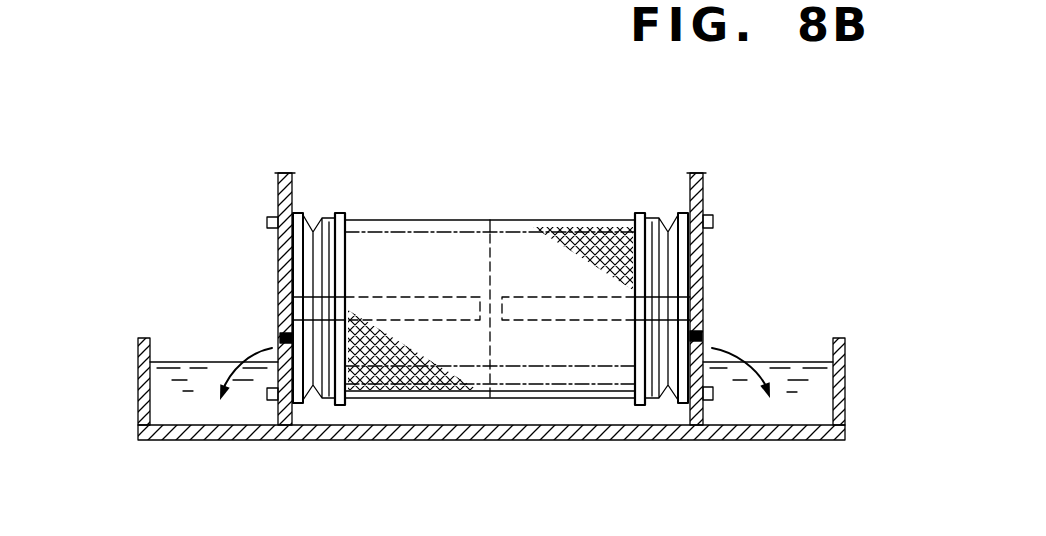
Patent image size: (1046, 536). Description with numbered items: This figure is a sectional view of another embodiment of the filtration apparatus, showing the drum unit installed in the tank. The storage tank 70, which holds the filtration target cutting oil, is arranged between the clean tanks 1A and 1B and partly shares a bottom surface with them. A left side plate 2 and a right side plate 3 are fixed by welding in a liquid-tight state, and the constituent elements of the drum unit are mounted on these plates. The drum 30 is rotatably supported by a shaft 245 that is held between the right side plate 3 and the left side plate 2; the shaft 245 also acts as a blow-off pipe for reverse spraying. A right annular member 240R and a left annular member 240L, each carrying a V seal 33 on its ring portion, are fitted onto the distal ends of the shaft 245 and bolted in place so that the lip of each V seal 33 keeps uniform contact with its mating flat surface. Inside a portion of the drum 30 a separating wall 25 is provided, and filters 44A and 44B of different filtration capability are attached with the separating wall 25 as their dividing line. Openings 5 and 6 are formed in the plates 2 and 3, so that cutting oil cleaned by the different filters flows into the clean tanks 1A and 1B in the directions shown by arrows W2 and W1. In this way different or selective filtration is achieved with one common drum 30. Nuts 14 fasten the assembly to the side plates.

The clean tank 1A is at (167, 390).
The clean tank 1B is at (815, 397).
The left side plate 2 is at (278, 186).
The right side plate 3 is at (703, 185).
The opening 5 is at (278, 343).
The opening 6 is at (703, 338).
The fastening nut 14 is at (267, 395).
The separating wall 25 is at (479, 385).
The drum 30 is at (463, 208).
The V seal 33 is at (322, 222).
The filter 44A is at (380, 387).
The filter 44B is at (548, 375).
The storage tank 70 is at (623, 413).
The left annular member 240L is at (296, 250).
The right annular member 240R is at (683, 263).
The shaft 245 is at (410, 293).
The arrow W1 is at (710, 348).
The arrow W2 is at (273, 346).